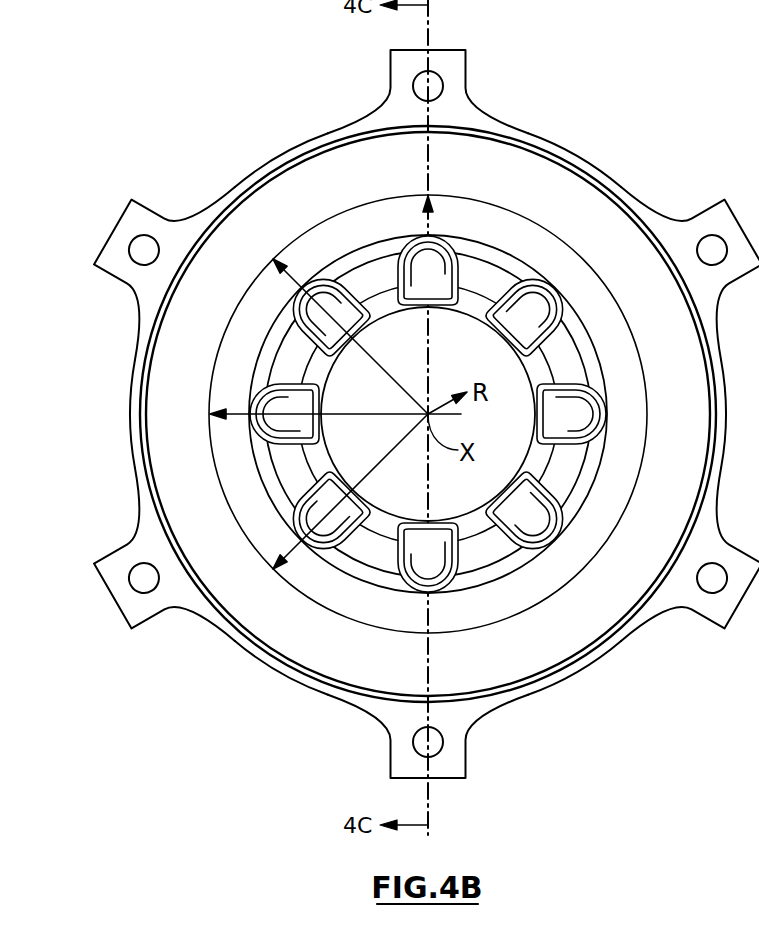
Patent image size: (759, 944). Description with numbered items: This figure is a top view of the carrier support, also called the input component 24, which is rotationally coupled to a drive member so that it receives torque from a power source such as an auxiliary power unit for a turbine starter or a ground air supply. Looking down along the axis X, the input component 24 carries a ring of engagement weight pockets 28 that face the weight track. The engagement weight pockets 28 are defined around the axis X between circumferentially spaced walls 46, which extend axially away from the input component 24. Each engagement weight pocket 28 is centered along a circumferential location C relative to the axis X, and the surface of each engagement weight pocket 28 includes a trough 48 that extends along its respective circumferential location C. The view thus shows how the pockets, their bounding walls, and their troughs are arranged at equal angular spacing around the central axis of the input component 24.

The input component 24 is at (160, 203).
The engagement weight pockets 28 is at (513, 328).
The circumferentially spaced walls 46 is at (481, 271).
The trough 48 is at (346, 322).